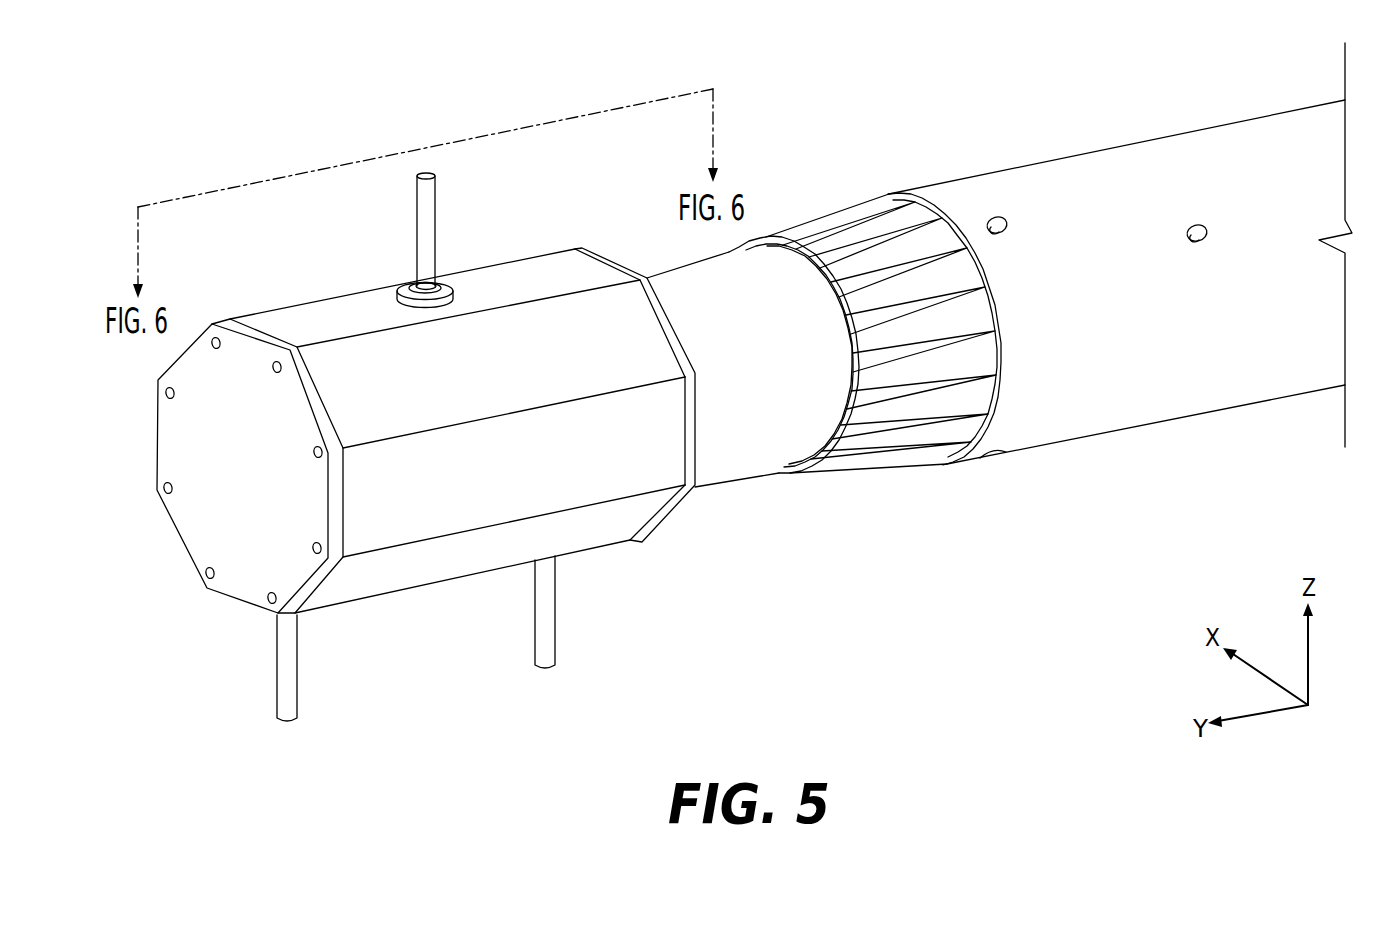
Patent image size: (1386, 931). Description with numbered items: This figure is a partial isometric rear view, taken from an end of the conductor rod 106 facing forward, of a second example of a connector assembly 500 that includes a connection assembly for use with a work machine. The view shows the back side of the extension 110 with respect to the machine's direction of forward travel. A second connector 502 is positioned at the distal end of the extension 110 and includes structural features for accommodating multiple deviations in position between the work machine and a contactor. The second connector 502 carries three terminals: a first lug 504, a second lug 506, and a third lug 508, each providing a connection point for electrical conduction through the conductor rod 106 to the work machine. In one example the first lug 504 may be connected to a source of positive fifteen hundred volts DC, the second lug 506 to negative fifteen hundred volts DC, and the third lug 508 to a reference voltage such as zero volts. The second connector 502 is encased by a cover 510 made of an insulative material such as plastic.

The connector assembly 500 is at (706, 727).
The second connector 502 is at (278, 297).
The first lug 504 is at (285, 722).
The second lug 506 is at (543, 668).
The third lug 508 is at (425, 193).
The cover 510 is at (595, 467).
The extension 110 is at (760, 418).
The conductor rod 106 is at (1175, 160).